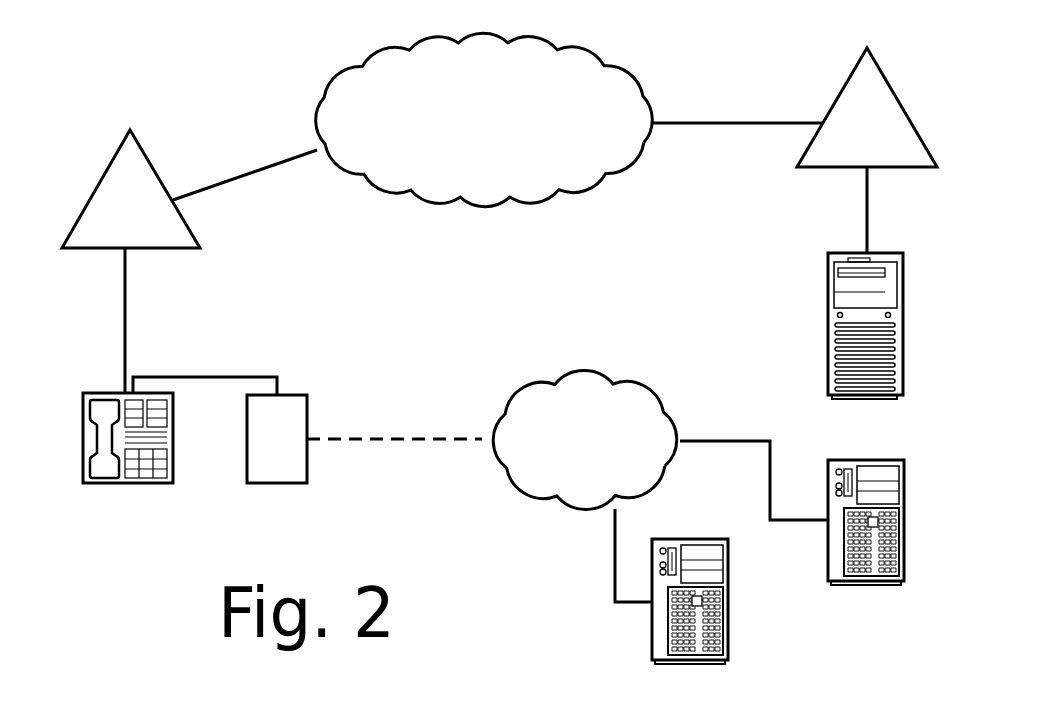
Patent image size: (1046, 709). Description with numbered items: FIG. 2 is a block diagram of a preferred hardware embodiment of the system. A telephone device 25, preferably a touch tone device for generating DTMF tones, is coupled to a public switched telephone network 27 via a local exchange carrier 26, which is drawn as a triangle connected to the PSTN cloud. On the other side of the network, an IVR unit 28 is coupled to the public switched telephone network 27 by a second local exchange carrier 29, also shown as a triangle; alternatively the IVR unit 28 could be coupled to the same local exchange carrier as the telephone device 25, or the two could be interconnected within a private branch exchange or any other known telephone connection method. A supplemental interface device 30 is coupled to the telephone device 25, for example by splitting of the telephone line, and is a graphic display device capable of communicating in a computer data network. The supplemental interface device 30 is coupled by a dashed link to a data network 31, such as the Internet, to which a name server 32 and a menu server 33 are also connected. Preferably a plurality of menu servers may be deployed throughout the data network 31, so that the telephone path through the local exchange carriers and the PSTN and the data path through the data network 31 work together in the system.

The telephone device 25 is at (83, 440).
The local exchange carrier 26 is at (155, 167).
The public switched telephone network 27 is at (435, 207).
The IVR unit 28 is at (828, 313).
The local exchange carrier 29 is at (844, 85).
The supplemental interface device 30 is at (307, 412).
The data network 31 is at (603, 370).
The name server 32 is at (728, 615).
The menu server 33 is at (905, 480).